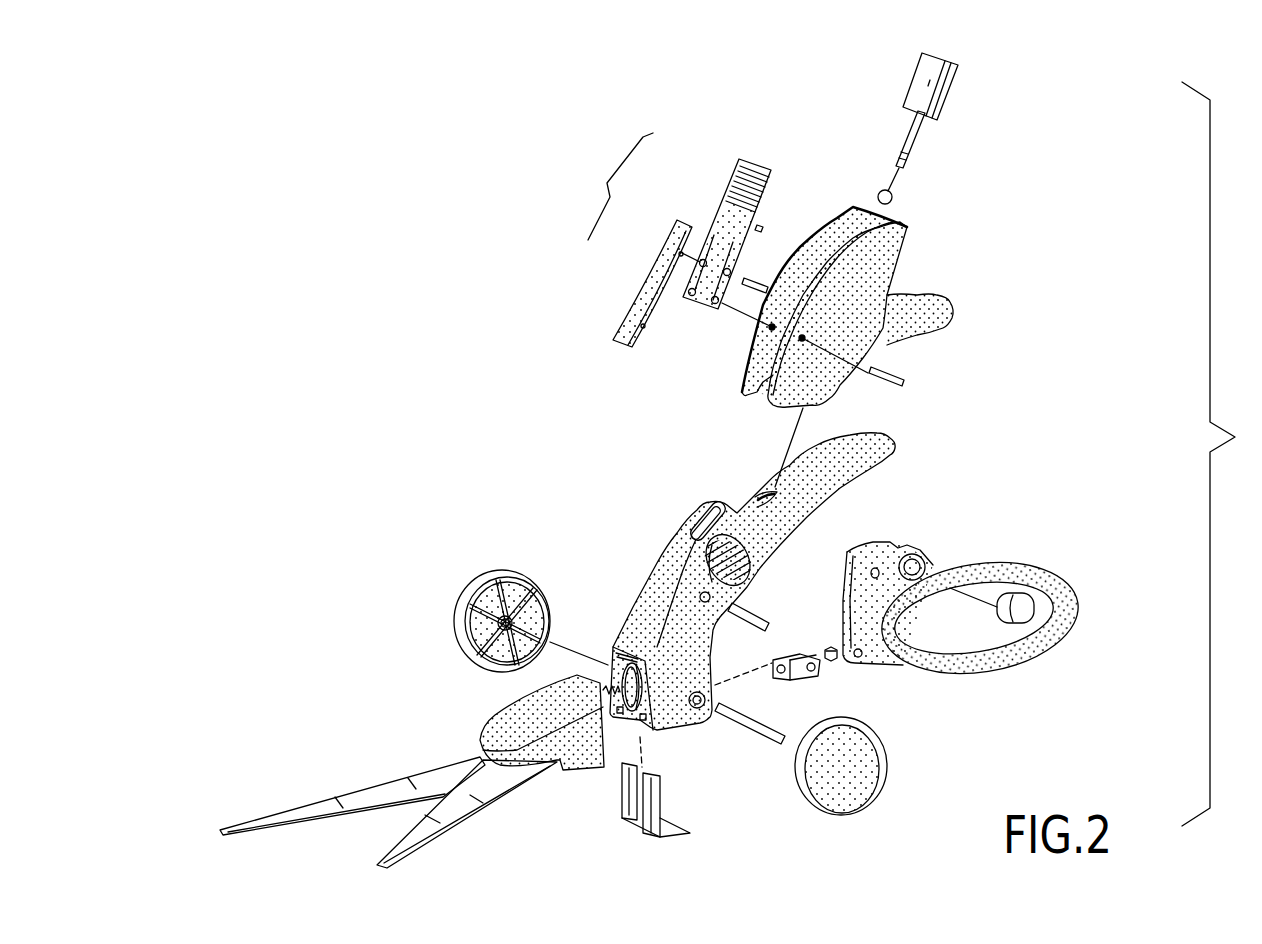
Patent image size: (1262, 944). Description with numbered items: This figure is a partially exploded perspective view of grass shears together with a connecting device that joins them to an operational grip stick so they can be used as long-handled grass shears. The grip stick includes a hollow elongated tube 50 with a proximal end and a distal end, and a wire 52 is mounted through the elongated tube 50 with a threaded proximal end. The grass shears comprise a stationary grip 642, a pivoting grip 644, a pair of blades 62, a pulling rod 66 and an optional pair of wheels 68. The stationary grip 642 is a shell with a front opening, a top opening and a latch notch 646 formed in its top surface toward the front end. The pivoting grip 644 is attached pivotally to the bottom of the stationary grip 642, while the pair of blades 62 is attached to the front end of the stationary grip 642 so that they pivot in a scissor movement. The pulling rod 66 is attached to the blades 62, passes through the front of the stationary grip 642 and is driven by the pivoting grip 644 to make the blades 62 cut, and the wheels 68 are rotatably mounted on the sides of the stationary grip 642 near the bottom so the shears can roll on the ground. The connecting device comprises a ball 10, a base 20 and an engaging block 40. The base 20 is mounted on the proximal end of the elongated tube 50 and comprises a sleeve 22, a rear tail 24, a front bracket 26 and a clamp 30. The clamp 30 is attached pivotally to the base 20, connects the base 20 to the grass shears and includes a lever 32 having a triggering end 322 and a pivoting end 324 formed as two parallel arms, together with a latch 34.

The ball 10 is at (878, 192).
The base 20 is at (867, 342).
The sleeve 22 is at (843, 235).
The rear tail 24 is at (918, 310).
The front bracket 26 is at (740, 380).
The clamp 30 is at (611, 186).
The lever 32 is at (716, 221).
The triggering end 322 is at (740, 165).
The pivoting end 324 is at (703, 310).
The latch 34 is at (638, 290).
The engaging block 40 is at (1025, 597).
The elongated tube 50 is at (913, 97).
The wire 52 is at (903, 137).
The pair of blades 62 is at (382, 787).
The stationary grip 642 is at (784, 600).
The pivoting grip 644 is at (1057, 628).
The latch notch 646 is at (690, 523).
The pulling rod 66 is at (610, 678).
The pair of wheels 68 is at (862, 755).